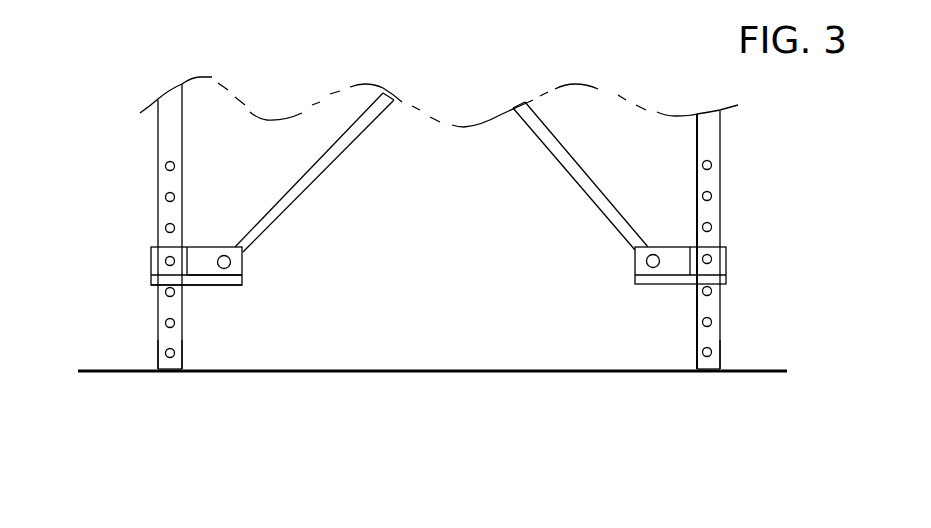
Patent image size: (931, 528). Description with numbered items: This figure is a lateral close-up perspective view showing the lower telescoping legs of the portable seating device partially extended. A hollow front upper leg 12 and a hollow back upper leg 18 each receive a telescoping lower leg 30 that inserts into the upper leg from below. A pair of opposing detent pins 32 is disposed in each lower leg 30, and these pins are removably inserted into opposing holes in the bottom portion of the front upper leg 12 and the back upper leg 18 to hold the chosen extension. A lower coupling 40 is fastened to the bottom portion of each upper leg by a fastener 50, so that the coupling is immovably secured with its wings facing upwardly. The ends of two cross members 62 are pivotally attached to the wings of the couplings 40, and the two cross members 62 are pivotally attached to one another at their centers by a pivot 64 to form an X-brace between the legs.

The front upper leg 12 is at (720, 218).
The back upper leg 18 is at (158, 212).
The telescoping lower leg 30 is at (158, 347).
The detent pin 32 is at (158, 166).
The coupling 40 is at (215, 285).
The fastener 50 is at (151, 263).
The cross member 62 is at (315, 180).
The pivot 64 is at (230, 262).